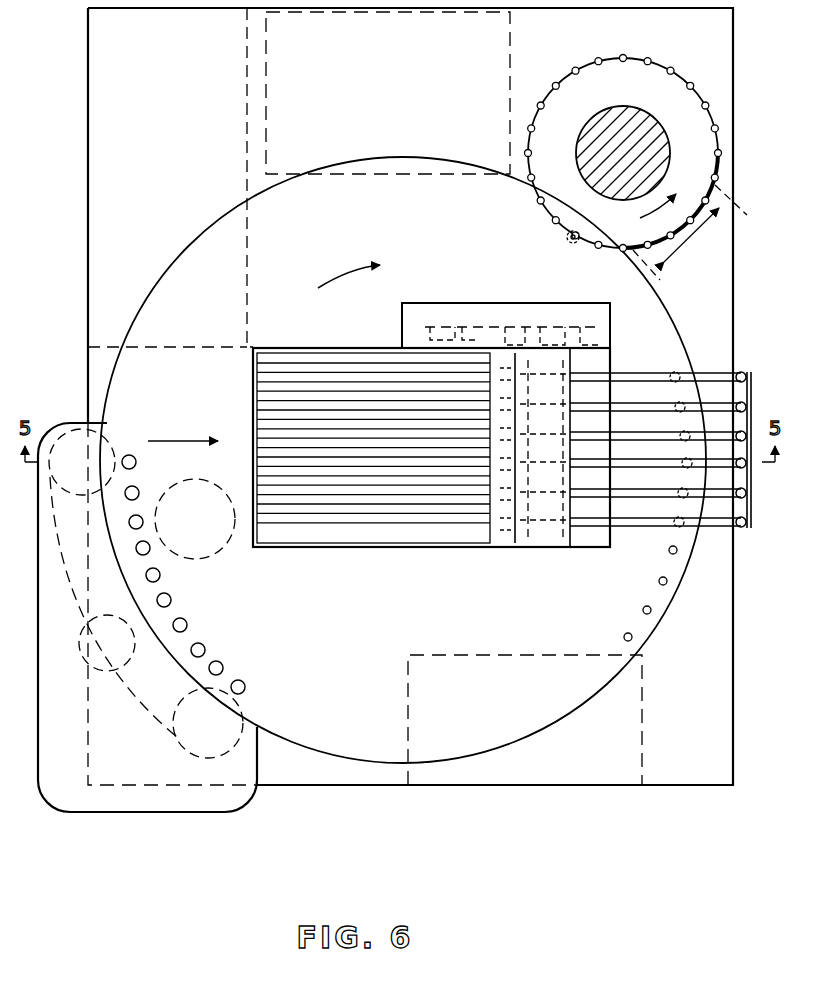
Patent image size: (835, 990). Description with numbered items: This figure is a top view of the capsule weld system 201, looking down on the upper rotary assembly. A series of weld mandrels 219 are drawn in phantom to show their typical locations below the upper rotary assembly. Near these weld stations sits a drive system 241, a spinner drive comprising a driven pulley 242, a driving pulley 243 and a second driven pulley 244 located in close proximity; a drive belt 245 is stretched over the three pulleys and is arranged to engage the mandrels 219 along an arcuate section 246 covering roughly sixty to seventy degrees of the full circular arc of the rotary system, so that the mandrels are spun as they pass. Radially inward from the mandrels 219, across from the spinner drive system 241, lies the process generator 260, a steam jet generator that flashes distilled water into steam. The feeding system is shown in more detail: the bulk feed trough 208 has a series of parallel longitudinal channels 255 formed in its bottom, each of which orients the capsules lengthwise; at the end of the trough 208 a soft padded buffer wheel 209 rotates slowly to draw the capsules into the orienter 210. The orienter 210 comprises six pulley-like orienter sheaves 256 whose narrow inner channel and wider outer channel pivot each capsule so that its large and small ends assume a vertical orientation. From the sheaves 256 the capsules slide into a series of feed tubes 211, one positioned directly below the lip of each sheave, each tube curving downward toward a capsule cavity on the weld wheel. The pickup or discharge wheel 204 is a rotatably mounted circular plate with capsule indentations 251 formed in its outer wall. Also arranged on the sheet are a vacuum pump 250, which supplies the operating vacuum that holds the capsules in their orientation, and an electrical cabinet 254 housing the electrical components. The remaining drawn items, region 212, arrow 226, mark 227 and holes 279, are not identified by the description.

The capsule weld system 201 is at (722, 800).
The pickup wheel 204 is at (676, 96).
The bulk feed trough 208 is at (322, 348).
The buffer wheel 209 is at (534, 332).
The orienter 210 is at (661, 368).
The feed tube 211 is at (753, 490).
The housing compartment 212 is at (122, 140).
The weld mandrels 219 is at (230, 682).
The movement direction 226 is at (703, 235).
The gear tooth 227 is at (722, 145).
The drive system 241 is at (142, 708).
The driven pulley 242 is at (192, 735).
The driving pulley 243 is at (91, 655).
The second driven pulley 244 is at (66, 458).
The drive belt 245 is at (168, 737).
The arcuate section 246 is at (170, 614).
The vacuum pump 250 is at (357, 80).
The capsule indentations 251 is at (564, 82).
The electrical cabinet 254 is at (556, 768).
The longitudinal channels 255 is at (388, 497).
The orienter sheaves 256 is at (653, 490).
The process generator 260 is at (179, 531).
The holes 279 is at (667, 582).